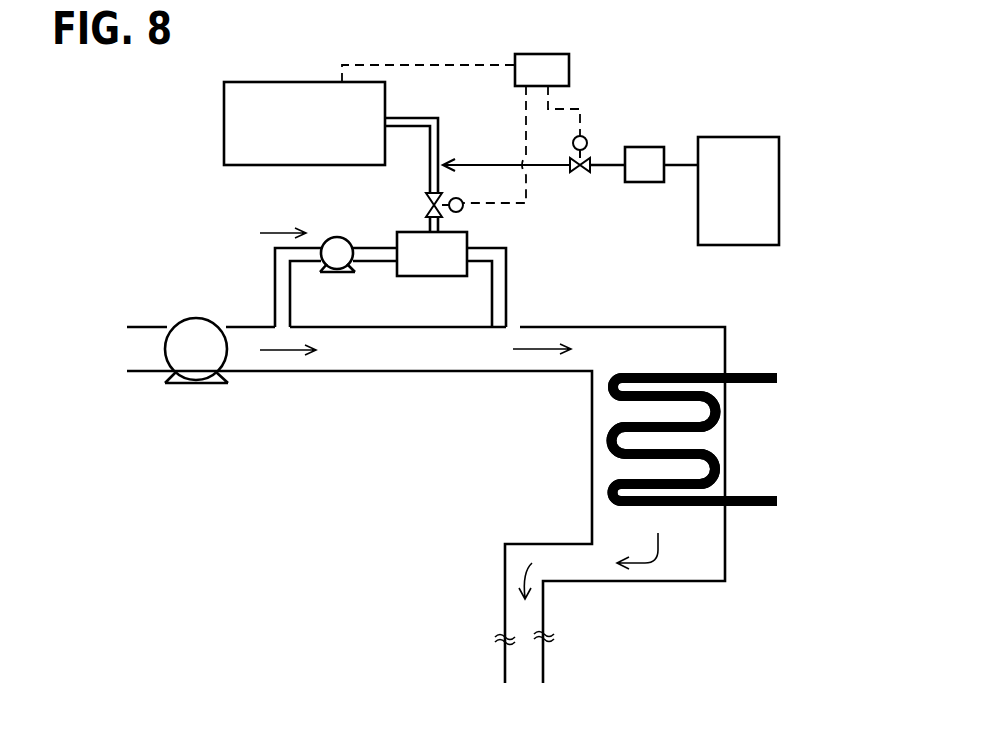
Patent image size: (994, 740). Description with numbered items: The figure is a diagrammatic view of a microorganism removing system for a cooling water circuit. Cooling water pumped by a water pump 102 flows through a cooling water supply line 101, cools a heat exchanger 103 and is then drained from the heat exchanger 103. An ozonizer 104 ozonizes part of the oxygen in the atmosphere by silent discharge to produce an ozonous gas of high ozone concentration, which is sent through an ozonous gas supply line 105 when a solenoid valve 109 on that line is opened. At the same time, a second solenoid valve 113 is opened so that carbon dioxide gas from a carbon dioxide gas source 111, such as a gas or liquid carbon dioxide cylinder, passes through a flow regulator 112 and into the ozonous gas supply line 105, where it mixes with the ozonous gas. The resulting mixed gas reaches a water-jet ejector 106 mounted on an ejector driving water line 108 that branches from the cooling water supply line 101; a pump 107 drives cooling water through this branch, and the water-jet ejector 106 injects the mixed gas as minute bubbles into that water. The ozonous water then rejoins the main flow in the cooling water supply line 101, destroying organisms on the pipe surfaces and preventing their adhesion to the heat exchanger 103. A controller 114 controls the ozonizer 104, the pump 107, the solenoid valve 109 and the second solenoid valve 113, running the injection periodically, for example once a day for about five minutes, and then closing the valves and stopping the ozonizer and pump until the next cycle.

The cooling water supply line 101 is at (438, 372).
The water pump 102 is at (196, 384).
The heat exchanger 103 is at (762, 372).
The ozonizer 104 is at (290, 82).
The ozonous gas supply line 105 is at (417, 118).
The water-jet ejector 106 is at (420, 278).
The pump 107 is at (333, 239).
The ejector driving water line 108 is at (273, 287).
The solenoid valve 109 is at (428, 203).
The carbon dioxide gas source 111 is at (755, 137).
The flow regulator 112 is at (657, 147).
The second solenoid valve 113 is at (592, 160).
The controller 114 is at (556, 54).